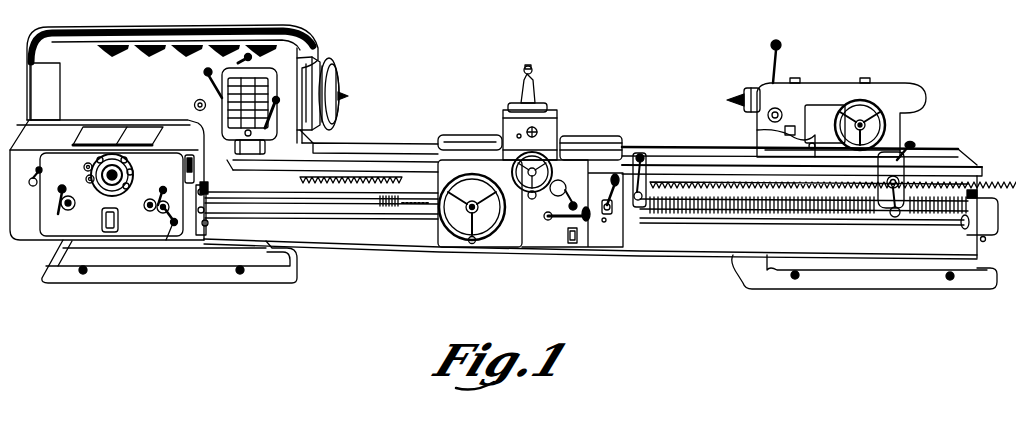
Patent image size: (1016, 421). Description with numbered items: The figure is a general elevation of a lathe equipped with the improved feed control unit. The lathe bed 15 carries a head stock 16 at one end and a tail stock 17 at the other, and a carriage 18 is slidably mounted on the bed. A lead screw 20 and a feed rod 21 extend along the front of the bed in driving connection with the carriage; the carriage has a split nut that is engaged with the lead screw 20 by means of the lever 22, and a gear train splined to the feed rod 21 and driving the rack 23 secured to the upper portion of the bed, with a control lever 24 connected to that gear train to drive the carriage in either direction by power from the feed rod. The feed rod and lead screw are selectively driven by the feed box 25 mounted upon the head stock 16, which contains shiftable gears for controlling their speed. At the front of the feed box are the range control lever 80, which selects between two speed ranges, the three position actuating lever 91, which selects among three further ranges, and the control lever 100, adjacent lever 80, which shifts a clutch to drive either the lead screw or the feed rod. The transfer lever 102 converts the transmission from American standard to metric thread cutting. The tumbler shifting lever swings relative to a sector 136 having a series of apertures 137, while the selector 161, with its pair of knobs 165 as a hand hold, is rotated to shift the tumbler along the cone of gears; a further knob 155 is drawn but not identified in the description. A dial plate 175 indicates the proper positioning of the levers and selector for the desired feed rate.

The lathe bed 15 is at (678, 146).
The head stock 16 is at (195, 26).
The tail stock 17 is at (823, 85).
The carriage 18 is at (593, 150).
The lead screw 20 is at (392, 205).
The feed rod 21 is at (348, 219).
The lever 22 is at (610, 222).
The rack 23 is at (342, 185).
The control lever 24 is at (570, 219).
The feed box 25 is at (152, 241).
The range control lever 80 is at (159, 192).
The three position actuating lever 91 is at (61, 209).
The control lever 100 is at (165, 241).
The transfer lever 102 is at (196, 166).
The sector 136 is at (136, 167).
The apertures 137 is at (134, 143).
The knob 155 is at (84, 166).
The selector 161 is at (95, 240).
The knobs 165 is at (86, 178).
The dial plate 175 is at (116, 135).